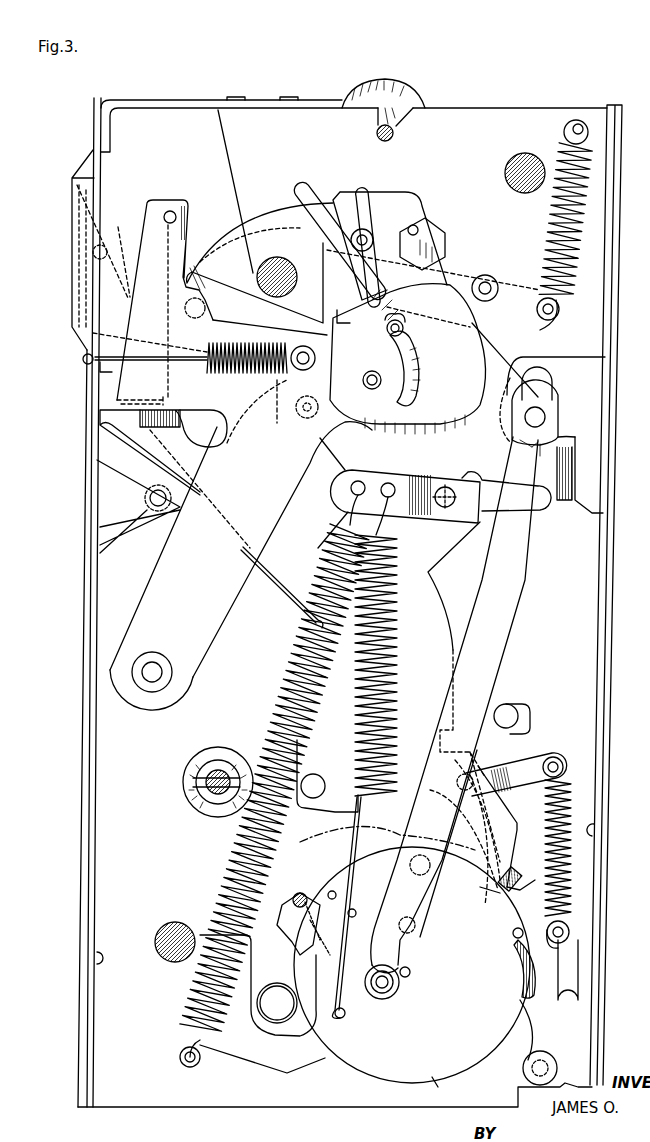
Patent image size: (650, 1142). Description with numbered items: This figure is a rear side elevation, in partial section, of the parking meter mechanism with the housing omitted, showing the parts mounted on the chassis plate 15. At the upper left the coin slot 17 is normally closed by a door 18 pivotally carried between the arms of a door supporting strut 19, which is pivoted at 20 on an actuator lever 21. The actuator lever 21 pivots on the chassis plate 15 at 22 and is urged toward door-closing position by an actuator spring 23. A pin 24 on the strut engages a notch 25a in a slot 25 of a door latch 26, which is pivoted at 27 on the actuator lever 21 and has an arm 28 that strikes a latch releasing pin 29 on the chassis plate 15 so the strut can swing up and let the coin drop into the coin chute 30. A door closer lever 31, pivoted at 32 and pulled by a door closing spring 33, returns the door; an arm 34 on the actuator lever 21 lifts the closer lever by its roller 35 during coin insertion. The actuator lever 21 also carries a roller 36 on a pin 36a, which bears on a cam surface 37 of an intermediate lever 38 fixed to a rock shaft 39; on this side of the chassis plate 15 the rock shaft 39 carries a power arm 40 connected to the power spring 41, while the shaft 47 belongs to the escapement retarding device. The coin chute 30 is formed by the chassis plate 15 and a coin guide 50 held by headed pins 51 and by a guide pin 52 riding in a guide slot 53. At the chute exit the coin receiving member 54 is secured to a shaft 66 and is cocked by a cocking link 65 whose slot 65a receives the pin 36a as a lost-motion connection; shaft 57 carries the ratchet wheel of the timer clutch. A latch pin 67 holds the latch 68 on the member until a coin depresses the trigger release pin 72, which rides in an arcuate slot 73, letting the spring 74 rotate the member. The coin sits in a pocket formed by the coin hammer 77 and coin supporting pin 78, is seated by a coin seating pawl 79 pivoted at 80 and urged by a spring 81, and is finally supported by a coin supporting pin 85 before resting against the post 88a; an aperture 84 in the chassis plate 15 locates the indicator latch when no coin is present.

The chassis plate 15 is at (493, 123).
The coin slot 17 is at (70, 272).
The door 18 is at (75, 231).
The door supporting strut 19 is at (131, 245).
The pivot 20 is at (322, 422).
The actuator lever 21 is at (272, 487).
The pivot 22 is at (154, 668).
The actuator spring 23 is at (235, 375).
The pin 24 is at (406, 330).
The slot 25 is at (407, 370).
The notch 25a is at (392, 340).
The door latch 26 is at (472, 330).
The pivot 27 is at (368, 390).
The arm 28 is at (370, 206).
The latch releasing pin 29 is at (418, 231).
The coin chute 30 is at (193, 464).
The door closer lever 31 is at (220, 240).
The pivot 32 is at (485, 276).
The door closing spring 33 is at (552, 218).
The arm 34 is at (307, 183).
The roller 35 is at (351, 198).
The roller 36 is at (560, 417).
The pin 36a is at (538, 413).
The cam surface 37 is at (560, 438).
The intermediate lever 38 is at (565, 473).
The rock shaft 39 is at (447, 487).
The power arm 40 is at (400, 473).
The power spring 41 is at (287, 673).
The shaft 47 is at (393, 136).
The coin guide 50 is at (277, 570).
The headed pins 51 is at (313, 795).
The guide pin 52 is at (158, 507).
The guide slot 53 is at (115, 527).
The coin receiving member 54 is at (397, 1067).
The shaft 57 is at (213, 793).
The cocking link 65 is at (507, 607).
The slot 65a is at (543, 377).
The shaft 66 is at (411, 973).
The latch pin 67 is at (300, 893).
The latch 68 is at (293, 927).
The trigger release pin 72 is at (403, 837).
The arcuate slot 73 is at (442, 893).
The spring 74 is at (390, 667).
The coin hammer 77 is at (331, 883).
The coin supporting pin 78 is at (423, 937).
The coin seating pawl 79 is at (528, 765).
The pivot 80 is at (455, 832).
The spring 81 is at (565, 823).
The aperture 84 is at (517, 878).
The coin supporting pin 85 is at (515, 936).
The post 88a is at (546, 1058).